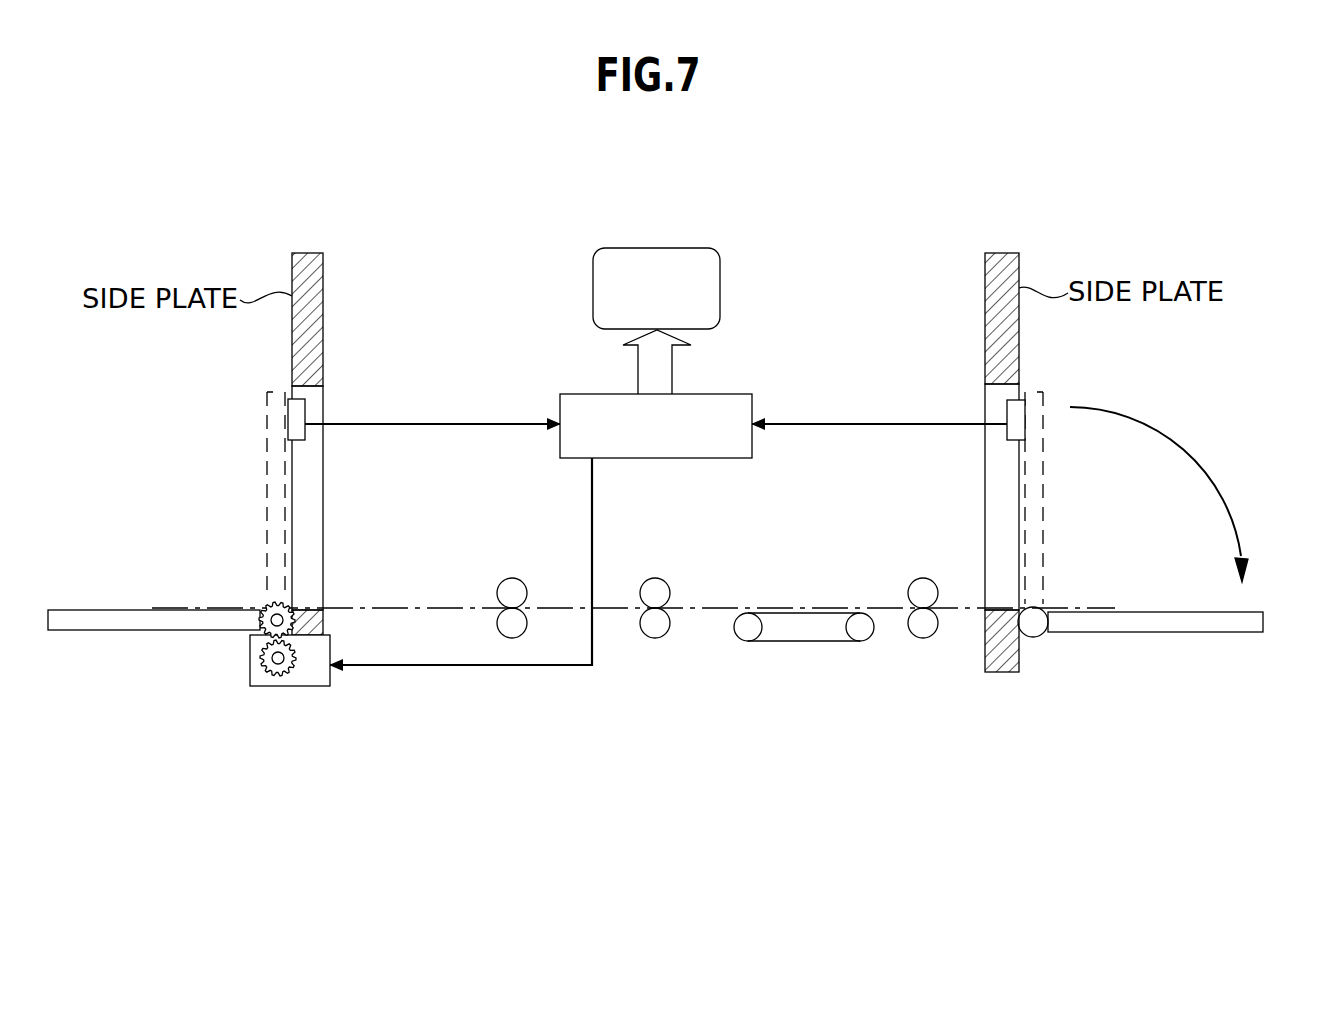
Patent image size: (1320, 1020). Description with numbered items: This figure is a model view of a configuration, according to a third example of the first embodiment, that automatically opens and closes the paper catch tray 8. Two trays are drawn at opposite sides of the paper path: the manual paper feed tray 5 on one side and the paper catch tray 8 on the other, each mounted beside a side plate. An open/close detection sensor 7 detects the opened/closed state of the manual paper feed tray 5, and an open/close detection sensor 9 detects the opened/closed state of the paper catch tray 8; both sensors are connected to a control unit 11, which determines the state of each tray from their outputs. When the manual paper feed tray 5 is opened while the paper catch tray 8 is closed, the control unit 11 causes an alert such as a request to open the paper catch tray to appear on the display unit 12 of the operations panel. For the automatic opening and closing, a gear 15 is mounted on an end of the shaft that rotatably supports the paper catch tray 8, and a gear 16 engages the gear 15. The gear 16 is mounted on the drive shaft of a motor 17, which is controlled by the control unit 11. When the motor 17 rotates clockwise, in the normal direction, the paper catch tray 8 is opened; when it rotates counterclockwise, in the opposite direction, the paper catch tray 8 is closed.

The manual paper feed tray 5 is at (1152, 632).
The open/close detection sensor 7 is at (1007, 410).
The paper catch tray 8 is at (168, 630).
The open/close detection sensor 9 is at (305, 410).
The control unit 11 is at (717, 394).
The display unit 12 is at (720, 272).
The gear 15 is at (267, 603).
The gear 16 is at (285, 684).
The motor 17 is at (317, 686).